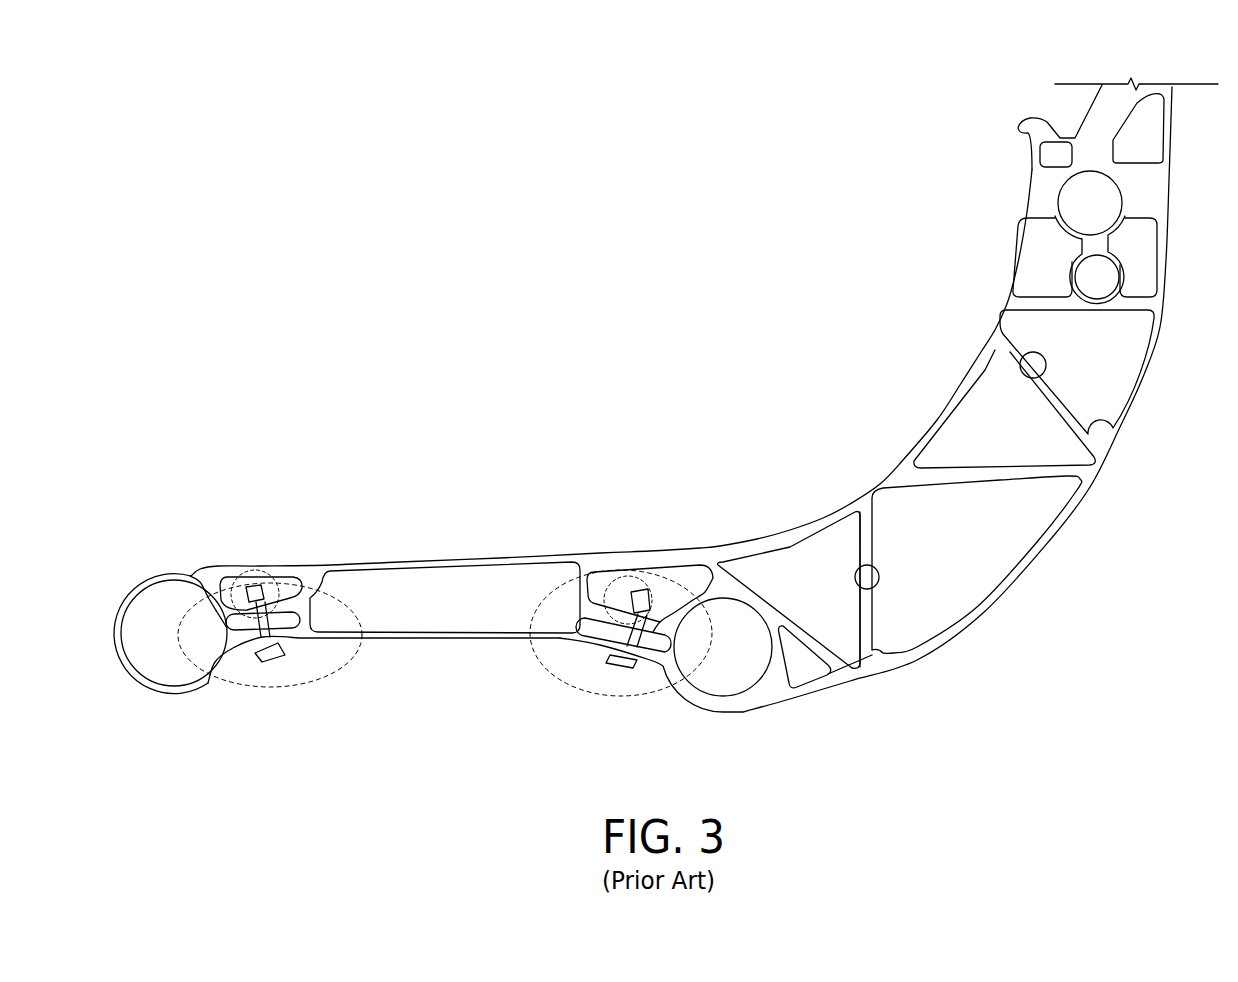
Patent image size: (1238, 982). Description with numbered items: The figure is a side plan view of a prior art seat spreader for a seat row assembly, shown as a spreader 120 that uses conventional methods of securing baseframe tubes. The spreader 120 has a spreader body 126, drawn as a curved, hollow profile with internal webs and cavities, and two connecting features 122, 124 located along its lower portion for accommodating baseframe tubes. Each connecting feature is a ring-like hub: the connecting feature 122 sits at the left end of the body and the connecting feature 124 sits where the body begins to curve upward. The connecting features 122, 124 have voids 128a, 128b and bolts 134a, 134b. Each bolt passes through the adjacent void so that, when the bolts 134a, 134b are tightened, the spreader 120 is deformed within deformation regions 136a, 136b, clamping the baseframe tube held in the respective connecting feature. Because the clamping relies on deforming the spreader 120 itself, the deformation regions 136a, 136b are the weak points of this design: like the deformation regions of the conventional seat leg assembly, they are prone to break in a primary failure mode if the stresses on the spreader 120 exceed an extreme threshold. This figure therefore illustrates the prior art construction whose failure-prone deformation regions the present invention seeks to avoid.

The spreader 120 is at (901, 104).
The connecting feature 122 is at (185, 678).
The connecting feature 124 is at (733, 697).
The spreader body 126 is at (985, 333).
The void 128a is at (257, 634).
The void 128b is at (660, 645).
The bolt 134a is at (247, 587).
The bolt 134b is at (620, 592).
The deformation region 136a is at (303, 566).
The deformation region 136b is at (640, 600).